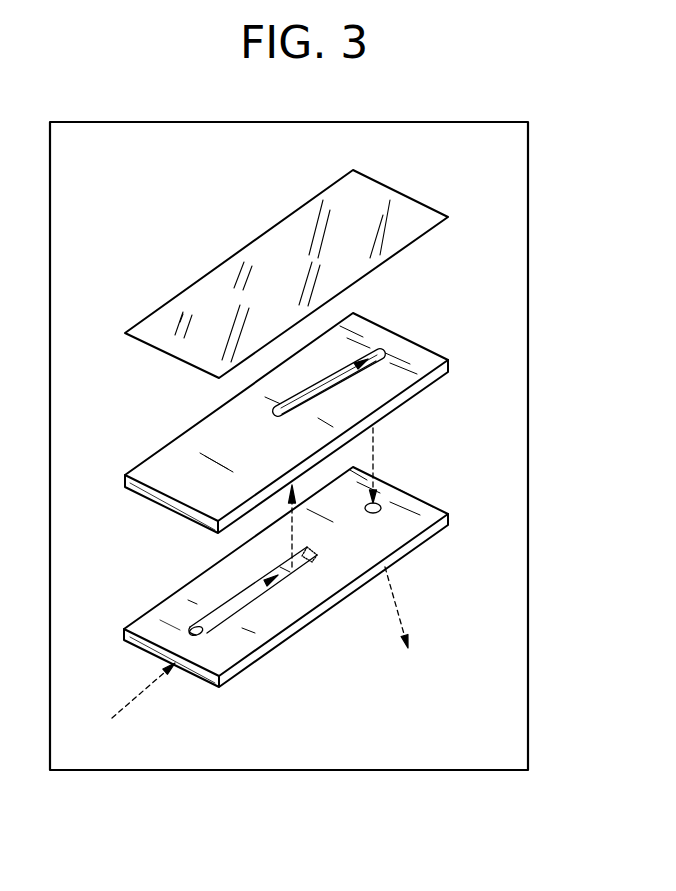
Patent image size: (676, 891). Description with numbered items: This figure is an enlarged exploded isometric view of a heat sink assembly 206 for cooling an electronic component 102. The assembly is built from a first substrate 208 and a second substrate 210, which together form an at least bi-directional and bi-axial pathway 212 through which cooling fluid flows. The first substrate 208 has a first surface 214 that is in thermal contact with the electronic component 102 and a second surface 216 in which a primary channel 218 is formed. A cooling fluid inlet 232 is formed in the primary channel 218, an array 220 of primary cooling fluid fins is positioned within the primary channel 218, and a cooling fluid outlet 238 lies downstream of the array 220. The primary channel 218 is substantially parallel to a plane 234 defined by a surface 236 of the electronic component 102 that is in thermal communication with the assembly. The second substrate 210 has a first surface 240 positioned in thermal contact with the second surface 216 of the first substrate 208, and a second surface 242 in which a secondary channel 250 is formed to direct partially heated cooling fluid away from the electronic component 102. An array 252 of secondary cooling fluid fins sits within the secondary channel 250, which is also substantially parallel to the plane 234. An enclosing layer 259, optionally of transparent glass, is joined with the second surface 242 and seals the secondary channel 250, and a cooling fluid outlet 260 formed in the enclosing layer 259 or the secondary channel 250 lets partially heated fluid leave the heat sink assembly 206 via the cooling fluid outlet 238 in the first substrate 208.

The electronic component 102 is at (289, 484).
The plane 234 is at (367, 771).
The heat sink assembly 206 is at (418, 160).
The enclosing layer 259 is at (413, 217).
The cooling fluid outlet 260 is at (318, 354).
The second substrate 210 is at (290, 410).
The array of secondary cooling fluid fins 252 is at (273, 420).
The secondary channel 250 is at (347, 375).
The second surface of second substrate 242 is at (170, 460).
The first surface of second substrate 240 is at (150, 498).
The pathway 212 is at (378, 451).
The cooling fluid outlet 238 is at (383, 506).
The first substrate 208 is at (286, 607).
The primary channel 218 is at (216, 601).
The second surface of first substrate 216 is at (170, 612).
The cooling fluid inlet 232 is at (188, 629).
The array of primary cooling fluid fins 220 is at (300, 562).
The first surface of first substrate 214 is at (253, 664).
The surface of electronic component 236 is at (490, 730).